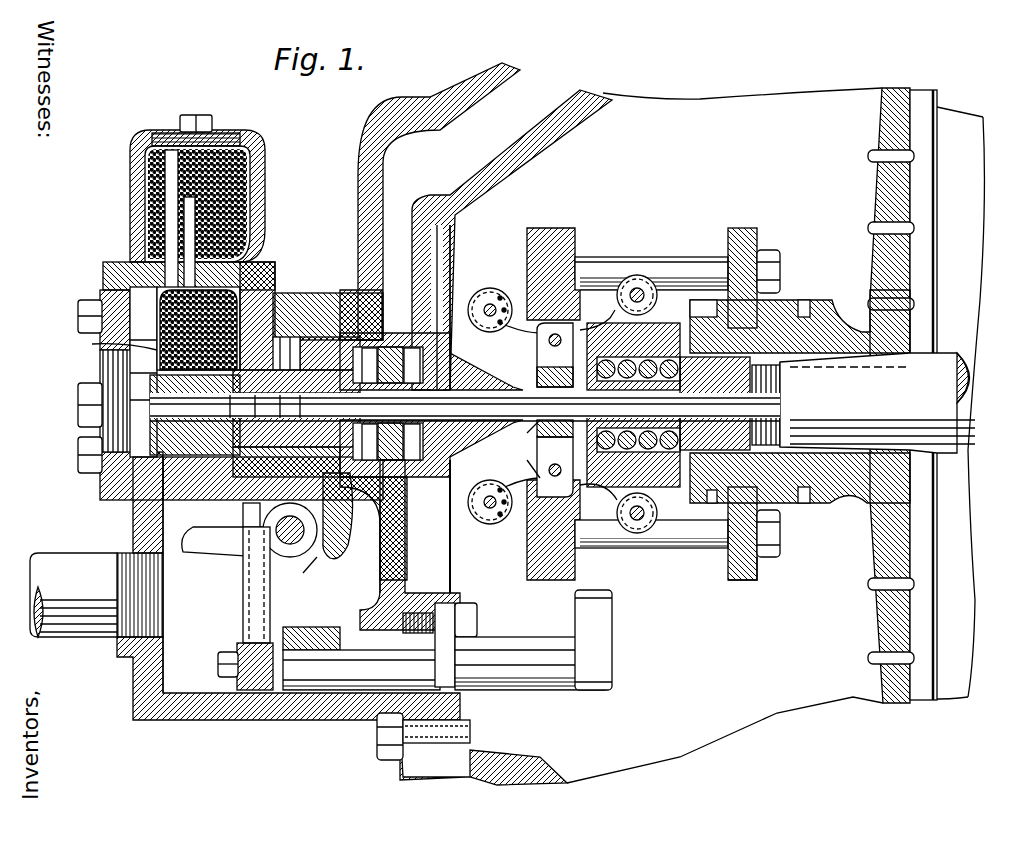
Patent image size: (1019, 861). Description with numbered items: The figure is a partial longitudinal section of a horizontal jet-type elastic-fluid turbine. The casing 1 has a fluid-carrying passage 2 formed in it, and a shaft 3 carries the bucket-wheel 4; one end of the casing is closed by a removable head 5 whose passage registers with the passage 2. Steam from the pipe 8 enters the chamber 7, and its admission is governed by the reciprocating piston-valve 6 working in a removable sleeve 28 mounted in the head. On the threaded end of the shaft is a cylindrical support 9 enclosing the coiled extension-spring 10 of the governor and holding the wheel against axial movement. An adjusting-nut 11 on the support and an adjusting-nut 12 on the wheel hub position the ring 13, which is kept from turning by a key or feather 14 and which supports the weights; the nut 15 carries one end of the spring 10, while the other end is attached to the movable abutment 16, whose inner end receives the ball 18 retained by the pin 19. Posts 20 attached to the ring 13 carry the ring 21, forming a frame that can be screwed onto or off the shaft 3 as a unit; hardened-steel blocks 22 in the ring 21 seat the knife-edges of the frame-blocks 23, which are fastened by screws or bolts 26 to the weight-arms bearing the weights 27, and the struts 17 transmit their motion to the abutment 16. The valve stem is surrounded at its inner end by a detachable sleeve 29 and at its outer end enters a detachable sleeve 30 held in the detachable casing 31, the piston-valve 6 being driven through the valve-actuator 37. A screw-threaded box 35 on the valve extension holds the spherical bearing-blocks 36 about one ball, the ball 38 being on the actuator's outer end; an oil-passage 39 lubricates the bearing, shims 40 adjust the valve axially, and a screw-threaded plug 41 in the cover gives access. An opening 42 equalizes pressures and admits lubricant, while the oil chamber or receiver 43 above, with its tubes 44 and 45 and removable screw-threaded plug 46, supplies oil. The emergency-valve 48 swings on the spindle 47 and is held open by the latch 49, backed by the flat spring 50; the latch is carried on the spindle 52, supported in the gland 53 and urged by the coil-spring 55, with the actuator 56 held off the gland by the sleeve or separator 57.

The casing 1 is at (717, 435).
The fluid-carrying passage 2 is at (481, 205).
The shaft 3 is at (877, 403).
The bucket-wheel 4 is at (882, 127).
The removable head 5 is at (358, 185).
The reciprocating piston-valve 6 is at (407, 487).
The chamber 7 is at (230, 565).
The pipe 8 is at (82, 567).
The cylindrical support 9 is at (665, 337).
The coiled extension-spring 10 is at (665, 470).
The adjusting-nut 11 is at (700, 283).
The adjusting-nut 12 is at (823, 297).
The ring 13 is at (757, 567).
The key or feather 14 is at (787, 297).
The nut 15 is at (603, 338).
The movable abutment 16 is at (780, 505).
The struts 17 is at (615, 483).
The ball 18 is at (790, 398).
The pin 19 is at (840, 379).
The posts 20 is at (625, 258).
The ring 21 is at (555, 228).
The hardened-steel blocks 22 is at (527, 297).
The frame-blocks 23 is at (550, 352).
The screws or bolts 26 is at (555, 458).
The weights 27 is at (645, 276).
The removable sleeve 28 is at (385, 340).
The detachable sleeve 29 is at (527, 433).
The detachable sleeve 30 is at (342, 285).
The detachable casing 31 is at (255, 272).
The screw-threaded box or head 35 is at (107, 342).
The spherical bearing-blocks 36 is at (245, 485).
The valve-actuator 37 is at (540, 480).
The ball 38 is at (112, 482).
The oil-passage 39 is at (153, 372).
The shims 40 is at (240, 440).
The screw-threaded plug 41 is at (78, 412).
The opening 42 is at (287, 304).
The oil chamber or receiver 43 is at (240, 172).
The tube 44 is at (165, 212).
The tube 45 is at (184, 236).
The removable screw-threaded plug 46 is at (212, 133).
The spindle 47 is at (290, 542).
The emergency-valve 48 is at (205, 540).
The latch 49 is at (243, 557).
The flat spring 50 is at (318, 302).
The spindle 52 is at (313, 690).
The gland 53 is at (447, 680).
The coil-spring 55 is at (370, 703).
The actuator 56 is at (612, 632).
The sleeve or separator 57 is at (513, 650).